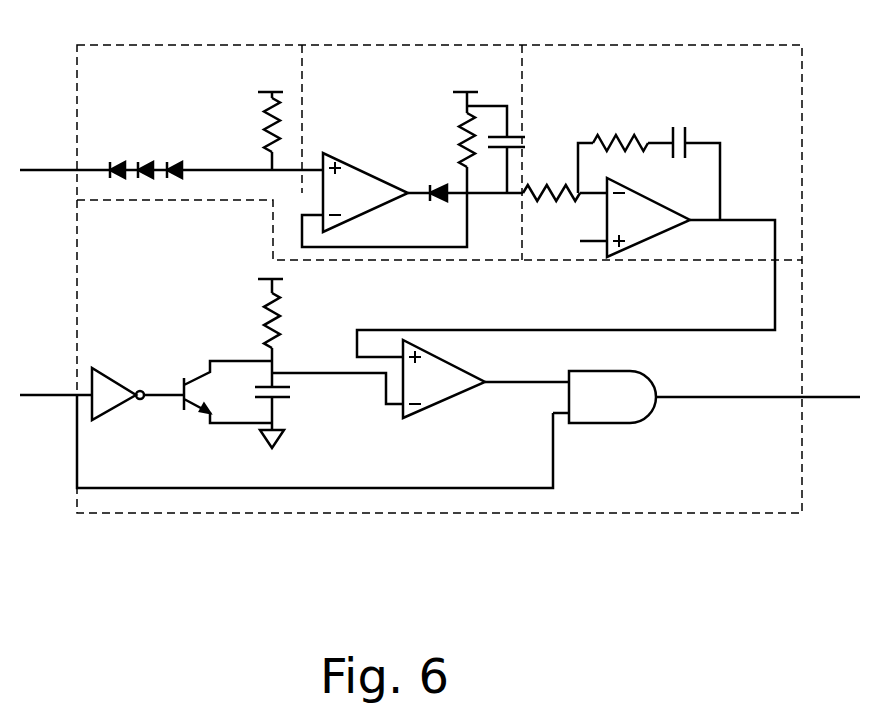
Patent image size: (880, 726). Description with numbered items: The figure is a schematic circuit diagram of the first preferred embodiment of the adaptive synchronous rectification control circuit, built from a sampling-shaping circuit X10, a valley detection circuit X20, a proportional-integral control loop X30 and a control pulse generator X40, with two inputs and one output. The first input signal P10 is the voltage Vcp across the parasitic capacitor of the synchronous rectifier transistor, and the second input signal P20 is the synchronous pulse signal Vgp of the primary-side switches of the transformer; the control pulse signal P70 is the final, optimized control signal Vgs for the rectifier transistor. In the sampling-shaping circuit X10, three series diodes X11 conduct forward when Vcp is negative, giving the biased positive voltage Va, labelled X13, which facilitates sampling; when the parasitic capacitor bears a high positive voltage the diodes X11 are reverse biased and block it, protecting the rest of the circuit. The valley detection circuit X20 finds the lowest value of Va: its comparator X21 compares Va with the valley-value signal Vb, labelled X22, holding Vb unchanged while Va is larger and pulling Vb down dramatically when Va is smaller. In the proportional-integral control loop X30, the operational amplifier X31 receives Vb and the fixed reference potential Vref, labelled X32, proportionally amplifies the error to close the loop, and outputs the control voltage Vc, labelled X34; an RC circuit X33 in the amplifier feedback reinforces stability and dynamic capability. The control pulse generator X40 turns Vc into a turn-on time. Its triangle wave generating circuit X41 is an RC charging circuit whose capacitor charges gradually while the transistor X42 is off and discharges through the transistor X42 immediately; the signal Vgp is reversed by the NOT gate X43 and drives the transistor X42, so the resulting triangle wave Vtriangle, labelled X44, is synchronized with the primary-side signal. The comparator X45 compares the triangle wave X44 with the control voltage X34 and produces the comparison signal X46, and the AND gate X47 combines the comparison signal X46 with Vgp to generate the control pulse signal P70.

The sampling-shaping circuit X10 is at (171, 133).
The diodes X11 is at (216, 159).
The biased positive voltage Va X13 is at (248, 121).
The valley detection circuit X20 is at (413, 163).
The comparator X21 is at (384, 195).
The valley-value signal Vb X22 is at (477, 151).
The proportional-integral control loop X30 is at (570, 209).
The operational amplifier X31 is at (616, 221).
The reference potential Vref X32 is at (565, 208).
The RC circuit X33 is at (641, 166).
The control voltage Vc X34 is at (570, 273).
The control pulse generator X40 is at (440, 366).
The triangle wave generating circuit X41 is at (246, 354).
The transistor X42 is at (222, 404).
The NOT gate X43 is at (138, 384).
The triangle wave Vtriangle X44 is at (337, 388).
The comparator X45 is at (446, 387).
The comparison signal X46 is at (527, 370).
The AND gate X47 is at (605, 411).
The first input signal P10 is at (65, 159).
The second input signal P20 is at (56, 384).
The control pulse signal P70 is at (758, 384).